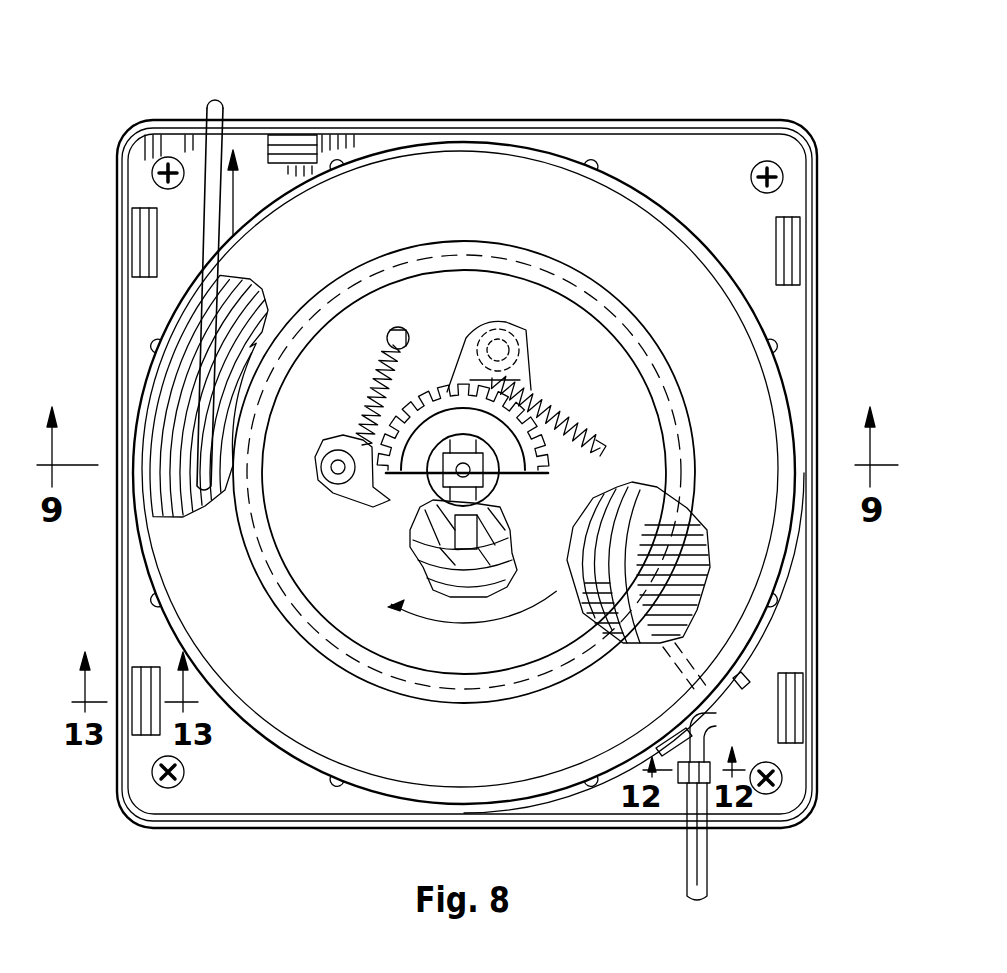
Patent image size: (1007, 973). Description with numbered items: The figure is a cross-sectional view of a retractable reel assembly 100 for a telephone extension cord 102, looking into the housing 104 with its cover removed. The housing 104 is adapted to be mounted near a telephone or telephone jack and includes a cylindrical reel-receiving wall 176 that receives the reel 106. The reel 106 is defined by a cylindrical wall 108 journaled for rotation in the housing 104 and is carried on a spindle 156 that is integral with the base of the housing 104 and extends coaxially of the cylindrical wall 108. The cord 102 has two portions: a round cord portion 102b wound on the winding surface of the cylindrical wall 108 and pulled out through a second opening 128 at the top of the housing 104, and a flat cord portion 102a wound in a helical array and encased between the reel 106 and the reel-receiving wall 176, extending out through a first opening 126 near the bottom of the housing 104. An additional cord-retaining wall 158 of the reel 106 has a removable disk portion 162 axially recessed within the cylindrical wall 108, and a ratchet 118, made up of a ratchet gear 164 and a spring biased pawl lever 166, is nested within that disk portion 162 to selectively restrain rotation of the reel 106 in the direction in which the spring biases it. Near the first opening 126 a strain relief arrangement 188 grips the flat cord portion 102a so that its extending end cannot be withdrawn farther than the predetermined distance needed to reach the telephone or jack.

The retractable reel assembly 100 is at (519, 104).
The telephone extension cord 102 is at (228, 112).
The flat cord portion 102a is at (695, 880).
The round cord portion 102b is at (210, 115).
The housing 104 is at (646, 121).
The reel 106 is at (617, 250).
The cylindrical wall 108 is at (628, 305).
The ratchet 118 is at (398, 503).
The first opening 126 is at (140, 232).
The second opening 128 is at (190, 287).
The spindle 156 is at (490, 484).
The additional cord-retaining wall 158 is at (742, 415).
The removable disk portion 162 is at (640, 422).
The ratchet gear 164 is at (427, 398).
The spring biased pawl lever 166 is at (355, 495).
The cylindrical reel-receiving wall 176 is at (707, 247).
The strain relief arrangement 188 is at (707, 789).